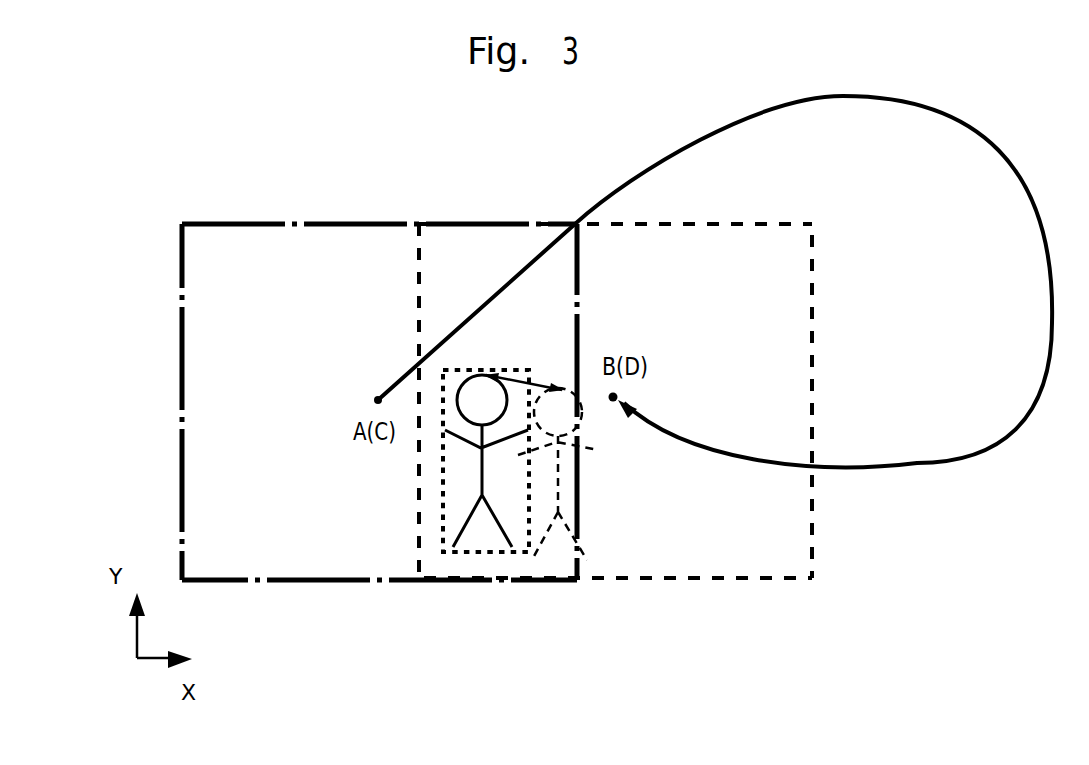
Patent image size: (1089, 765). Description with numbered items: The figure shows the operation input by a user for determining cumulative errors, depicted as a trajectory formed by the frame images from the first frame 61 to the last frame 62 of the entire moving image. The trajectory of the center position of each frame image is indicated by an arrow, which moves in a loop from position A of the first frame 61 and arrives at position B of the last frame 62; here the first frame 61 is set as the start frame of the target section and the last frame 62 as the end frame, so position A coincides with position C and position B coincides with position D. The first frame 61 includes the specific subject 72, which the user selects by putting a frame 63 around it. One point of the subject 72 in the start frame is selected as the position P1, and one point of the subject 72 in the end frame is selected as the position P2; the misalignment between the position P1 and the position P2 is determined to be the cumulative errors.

The first frame 61 is at (287, 222).
The last frame 62 is at (724, 581).
The frame 63 is at (490, 554).
The subject 72 is at (460, 440).
The position P1 is at (484, 373).
The position P2 is at (557, 386).